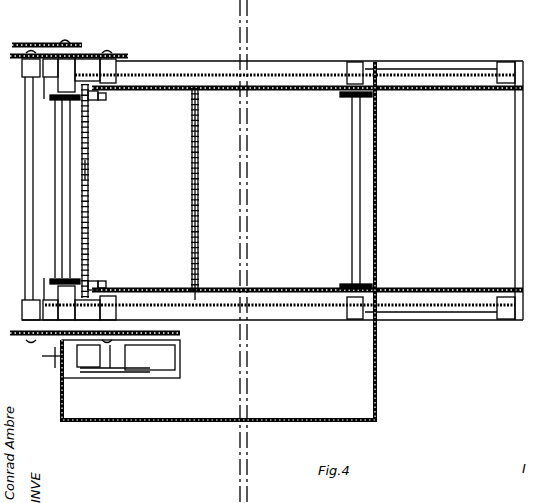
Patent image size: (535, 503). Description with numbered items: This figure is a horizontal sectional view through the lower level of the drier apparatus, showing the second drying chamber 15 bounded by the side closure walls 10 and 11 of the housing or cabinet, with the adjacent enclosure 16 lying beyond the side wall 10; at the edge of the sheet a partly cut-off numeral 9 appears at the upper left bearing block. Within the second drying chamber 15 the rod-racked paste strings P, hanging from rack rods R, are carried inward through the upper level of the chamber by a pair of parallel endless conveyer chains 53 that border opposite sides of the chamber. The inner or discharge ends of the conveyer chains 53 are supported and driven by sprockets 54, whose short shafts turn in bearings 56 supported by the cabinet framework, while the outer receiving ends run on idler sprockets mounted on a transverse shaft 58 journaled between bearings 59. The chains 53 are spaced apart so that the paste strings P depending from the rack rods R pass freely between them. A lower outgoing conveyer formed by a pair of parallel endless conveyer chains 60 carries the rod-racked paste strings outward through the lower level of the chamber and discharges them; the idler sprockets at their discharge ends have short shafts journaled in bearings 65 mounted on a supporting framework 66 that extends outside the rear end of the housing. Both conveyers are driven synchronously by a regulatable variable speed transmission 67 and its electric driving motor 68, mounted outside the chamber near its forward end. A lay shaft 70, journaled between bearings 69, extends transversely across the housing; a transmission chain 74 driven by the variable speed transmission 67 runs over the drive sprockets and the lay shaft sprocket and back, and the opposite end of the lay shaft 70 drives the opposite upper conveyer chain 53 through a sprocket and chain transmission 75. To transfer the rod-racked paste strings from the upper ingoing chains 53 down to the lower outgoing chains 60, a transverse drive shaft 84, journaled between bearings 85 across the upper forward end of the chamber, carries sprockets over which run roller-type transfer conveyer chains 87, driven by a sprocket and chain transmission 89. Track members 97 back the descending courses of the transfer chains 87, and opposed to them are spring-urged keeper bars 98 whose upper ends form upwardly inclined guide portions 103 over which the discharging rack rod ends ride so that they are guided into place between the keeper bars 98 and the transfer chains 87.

The bearing block 9 is at (22, 68).
The side closure wall 10 is at (292, 322).
The side closure wall 11 is at (292, 63).
The second drying chamber 15 is at (291, 195).
The adjacent enclosure 16 is at (278, 418).
The conveyer chains 53 is at (145, 92).
The sprockets 54 is at (352, 62).
The bearings 56 is at (112, 70).
The transverse shaft 58 is at (352, 152).
The bearings 59 is at (348, 322).
The conveyer chains 60 is at (438, 92).
The bearings 65 is at (505, 62).
The supporting framework 66 is at (466, 64).
The regulatable variable speed transmission 67 is at (176, 358).
The electric driving motor 68 is at (92, 366).
The bearings 69 is at (24, 306).
The lay shaft 70 is at (25, 200).
The transmission chain 74 is at (178, 333).
The sprocket and chain transmission 75 is at (86, 53).
The transverse drive shaft 84 is at (62, 182).
The bearings 85 is at (58, 66).
The transfer conveyer chains 87 is at (62, 100).
The sprocket and chain transmission 89 is at (50, 43).
The track members 97 is at (70, 130).
The keeper bars 98 is at (96, 100).
The guide portions 103 is at (102, 98).
The rack rods R is at (89, 146).
The paste strings P is at (90, 182).